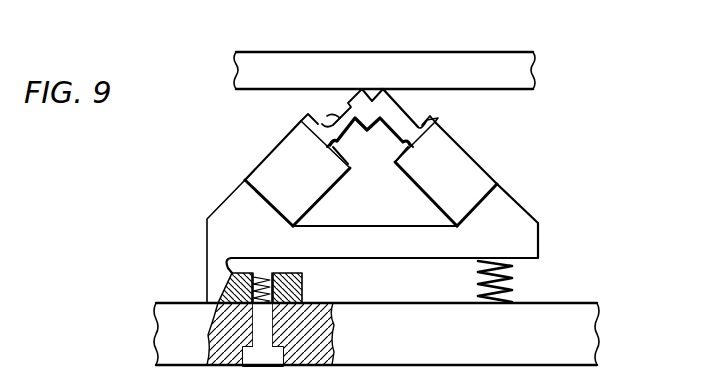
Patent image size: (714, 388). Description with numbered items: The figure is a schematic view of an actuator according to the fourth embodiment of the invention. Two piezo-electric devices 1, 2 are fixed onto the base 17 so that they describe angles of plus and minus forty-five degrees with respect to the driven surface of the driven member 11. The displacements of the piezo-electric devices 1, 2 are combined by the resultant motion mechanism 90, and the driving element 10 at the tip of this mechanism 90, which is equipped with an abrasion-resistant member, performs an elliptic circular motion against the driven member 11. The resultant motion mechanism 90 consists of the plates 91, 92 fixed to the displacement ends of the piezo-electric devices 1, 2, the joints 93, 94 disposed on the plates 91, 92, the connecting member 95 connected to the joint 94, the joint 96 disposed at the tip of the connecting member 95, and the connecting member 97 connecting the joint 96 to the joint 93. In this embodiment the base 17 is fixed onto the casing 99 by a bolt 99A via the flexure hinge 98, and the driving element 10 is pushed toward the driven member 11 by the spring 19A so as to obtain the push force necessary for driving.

The piezo-electric device 1 is at (268, 168).
The piezo-electric device 2 is at (481, 188).
The driving element 10 is at (371, 99).
The driven member 11 is at (476, 58).
The base 17 is at (516, 220).
The spring 19A is at (508, 282).
The resultant motion mechanism 90 is at (366, 136).
The plate 91 is at (303, 121).
The plate 92 is at (443, 127).
The joint 93 is at (327, 116).
The joint 94 is at (438, 118).
The connecting member 95 is at (414, 126).
The joint 96 is at (348, 110).
The connecting member 97 is at (338, 123).
The flexure hinge 98 is at (213, 269).
The casing 99 is at (583, 312).
The bolt 99A is at (263, 330).